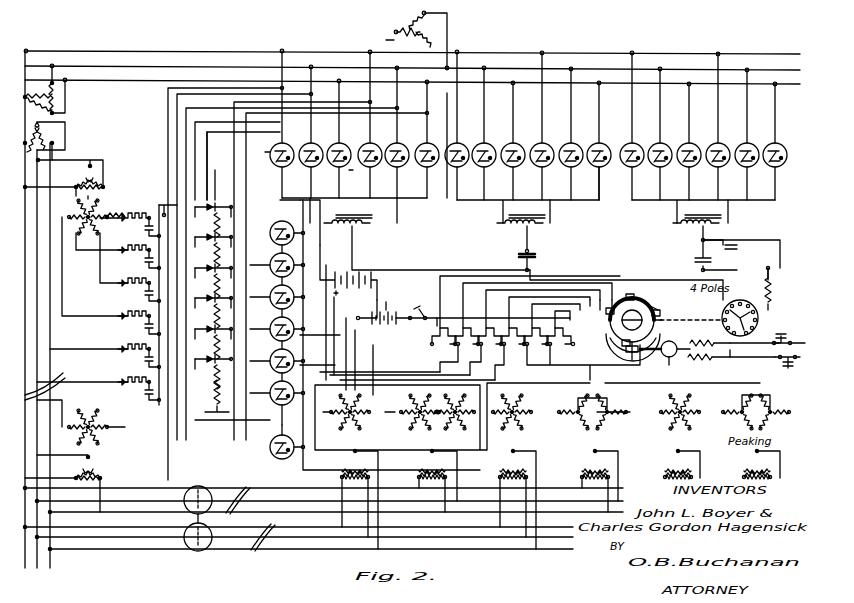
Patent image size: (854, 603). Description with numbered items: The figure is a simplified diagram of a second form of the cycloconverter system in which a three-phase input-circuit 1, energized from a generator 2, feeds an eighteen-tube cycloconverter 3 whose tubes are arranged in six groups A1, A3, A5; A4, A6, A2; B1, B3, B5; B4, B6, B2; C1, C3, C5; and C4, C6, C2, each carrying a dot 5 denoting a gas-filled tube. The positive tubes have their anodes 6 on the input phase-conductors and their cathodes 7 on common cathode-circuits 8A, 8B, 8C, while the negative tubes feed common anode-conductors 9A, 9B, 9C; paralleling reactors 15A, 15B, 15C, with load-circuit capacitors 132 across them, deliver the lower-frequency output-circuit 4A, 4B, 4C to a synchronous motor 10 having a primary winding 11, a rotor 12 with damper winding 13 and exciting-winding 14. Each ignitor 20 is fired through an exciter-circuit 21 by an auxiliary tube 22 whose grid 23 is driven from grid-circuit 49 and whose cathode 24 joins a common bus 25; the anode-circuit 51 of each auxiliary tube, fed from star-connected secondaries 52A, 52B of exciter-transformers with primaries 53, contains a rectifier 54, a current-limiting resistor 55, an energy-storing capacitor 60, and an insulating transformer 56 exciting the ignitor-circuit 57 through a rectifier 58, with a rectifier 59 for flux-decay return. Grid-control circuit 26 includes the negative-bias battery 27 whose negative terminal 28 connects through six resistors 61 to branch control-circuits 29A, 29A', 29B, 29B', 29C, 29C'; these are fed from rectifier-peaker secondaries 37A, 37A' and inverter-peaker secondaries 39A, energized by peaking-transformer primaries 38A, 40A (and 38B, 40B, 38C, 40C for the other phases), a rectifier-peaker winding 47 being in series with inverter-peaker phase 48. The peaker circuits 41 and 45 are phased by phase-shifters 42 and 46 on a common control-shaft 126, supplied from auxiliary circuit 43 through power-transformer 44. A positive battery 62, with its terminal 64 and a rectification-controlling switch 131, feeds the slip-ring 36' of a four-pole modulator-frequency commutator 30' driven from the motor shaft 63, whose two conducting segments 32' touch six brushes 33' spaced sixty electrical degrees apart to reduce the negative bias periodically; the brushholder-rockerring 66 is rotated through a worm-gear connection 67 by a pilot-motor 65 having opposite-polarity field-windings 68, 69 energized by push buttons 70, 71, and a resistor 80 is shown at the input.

The three-phase input-circuit 1 is at (104, 66).
The generator 2 is at (384, 40).
The cycloconverter 3 is at (608, 183).
The circle or dot 5 is at (280, 432).
The anode 6 is at (560, 178).
The cathode 7 is at (530, 124).
The variable-speed 3-phase motor 10 is at (749, 318).
The 3-phase primary winding 11 is at (775, 288).
The rotor 12 is at (755, 335).
The squirrel-cage secondary or damper winding 13 is at (737, 359).
The direct-current exciting-winding 14 is at (739, 312).
The ignitor 20 is at (354, 145).
The exciter-circuit 21 is at (161, 206).
The auxiliary or exciter-tube 22 is at (310, 222).
The control-grid 23 is at (272, 449).
The cathode 24 is at (239, 410).
The common cathode-circuit or bus 25 is at (88, 384).
The grid-control circuit 26 is at (348, 272).
The negative-bias battery 27 is at (344, 296).
The conductor / negative terminal 28 is at (358, 320).
The modulator-frequency commutator 30' is at (662, 341).
The conducting commutator-segment 32' is at (627, 311).
The commutator-brush 33' is at (666, 302).
The slip-ring 36' is at (669, 314).
The 3-phase input-frequency circuit 41 is at (238, 496).
The phase-shifter 42 is at (188, 491).
The auxiliary input-frequency circuit 43 is at (47, 386).
The auxiliary power-transformer 44 is at (41, 113).
The 3-phase input-frequency circuit 45 is at (263, 533).
The phase-shifter 46 is at (208, 532).
The rectifier-peaker winding 47 is at (416, 408).
The inverter-peaker phase 48 is at (348, 412).
The grid-circuit 49 is at (305, 225).
The anode-circuit 51 is at (290, 207).
The 6-phase star-connected secondary winding 52A is at (106, 214).
The 6-phase star-connected secondary winding 52B is at (96, 436).
The 3-phase primary winding 53 is at (100, 176).
The rectifier 54 is at (112, 209).
The current-limiting resistor 55 is at (139, 226).
The insulating transformer 56 is at (212, 391).
The ignitor-circuit 57 is at (216, 166).
The rectifier 58 is at (214, 196).
The rectifier 59 is at (220, 406).
The energy-storing capacitor 60 is at (139, 323).
The resistor 61 is at (448, 325).
The battery 62 is at (389, 299).
The shaft 63 is at (690, 311).
The positive terminal 64 is at (404, 326).
The pilot-motor 65 is at (668, 368).
The brushholder-rockerring 66 is at (606, 340).
The worm-gear connection 67 is at (631, 361).
The field-winding 68 is at (703, 337).
The field-winding 69 is at (731, 360).
The push button 70 is at (790, 332).
The push button 71 is at (787, 370).
The resistor 80 is at (418, 20).
The common control-shaft 126 is at (190, 532).
The rectification-controlling switch 131 is at (424, 306).
The load-circuit capacitor 132 is at (516, 255).
The output-circuit phase A 4A is at (345, 245).
The output-circuit phase B 4B is at (528, 238).
The output-circuit phase C 4C is at (698, 248).
The common cathode-circuit 8A is at (354, 205).
The common cathode-circuit 8B is at (528, 200).
The common cathode-circuit 8C is at (703, 200).
The common anode-conductor 9A is at (405, 198).
The common anode-conductor 9B is at (571, 200).
The common anode-conductor 9C is at (734, 200).
The paralleling reactor 15A is at (352, 228).
The paralleling reactor 15B is at (515, 228).
The paralleling reactor 15C is at (686, 236).
The branch control-circuit 29A is at (430, 343).
The branch control-circuit 29B is at (456, 343).
The branch control-circuit 29C is at (479, 343).
The branch control-circuit 29A' is at (502, 343).
The branch control-circuit 29B' is at (526, 343).
The branch control-circuit 29C' is at (548, 343).
The 3-phase-star-connected secondary winding 37A is at (398, 425).
The 3-phase-star-connected secondary winding 37A' is at (455, 418).
The 3-phase-connected primary winding 38A is at (424, 480).
The rectifier peaking-transformer 38B is at (586, 480).
The rectifier peaking-transformer 38C is at (748, 464).
The open-star 6-phase-connected secondary winding 39A is at (329, 422).
The 3-phase-connected primary winding 40A is at (343, 499).
The inverter peaking-transformer 40B is at (502, 499).
The inverter peaking-transformer 40C is at (670, 464).
The cycloconverter-tube A1 is at (286, 124).
The cycloconverter-tube A2 is at (430, 140).
The cycloconverter-tube A3 is at (314, 132).
The cycloconverter-tube A4 is at (373, 125).
The cycloconverter-tube A5 is at (342, 139).
The cycloconverter-tube A6 is at (400, 133).
The cycloconverter-tube B1 is at (460, 126).
The cycloconverter-tube B2 is at (602, 141).
The cycloconverter-tube B3 is at (487, 134).
The cycloconverter-tube B4 is at (545, 126).
The cycloconverter-tube B5 is at (516, 141).
The cycloconverter-tube B6 is at (574, 134).
The cycloconverter-tube C1 is at (635, 126).
The cycloconverter-tube C2 is at (778, 142).
The cycloconverter-tube C3 is at (663, 134).
The cycloconverter-tube C4 is at (721, 127).
The cycloconverter-tube C5 is at (692, 142).
The cycloconverter-tube C6 is at (750, 135).